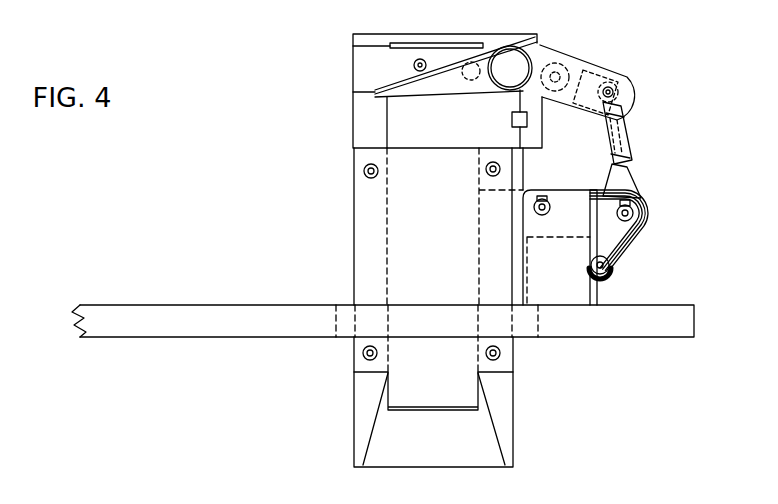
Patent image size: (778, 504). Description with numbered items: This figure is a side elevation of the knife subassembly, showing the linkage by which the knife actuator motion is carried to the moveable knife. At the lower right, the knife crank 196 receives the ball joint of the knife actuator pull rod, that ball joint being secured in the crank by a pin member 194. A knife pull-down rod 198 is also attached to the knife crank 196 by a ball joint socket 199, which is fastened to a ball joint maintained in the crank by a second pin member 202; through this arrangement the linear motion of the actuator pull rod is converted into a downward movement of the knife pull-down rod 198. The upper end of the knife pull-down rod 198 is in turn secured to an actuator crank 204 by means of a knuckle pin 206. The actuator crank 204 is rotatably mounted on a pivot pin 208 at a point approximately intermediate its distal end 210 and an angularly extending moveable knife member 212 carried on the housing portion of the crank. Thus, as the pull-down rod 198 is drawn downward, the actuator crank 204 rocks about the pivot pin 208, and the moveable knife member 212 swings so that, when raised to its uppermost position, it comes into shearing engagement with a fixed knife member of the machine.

The pin member 194 is at (611, 267).
The knife crank 196 is at (618, 238).
The knife pull-down rod 198 is at (632, 142).
The ball joint socket 199 is at (634, 193).
The pin member 202 is at (634, 215).
The actuator crank 204 is at (583, 75).
The knuckle pin 206 is at (614, 92).
The pivot pin 208 is at (571, 56).
The distal end 210 is at (576, 101).
The angularly extending moveable knife member 212 is at (466, 88).